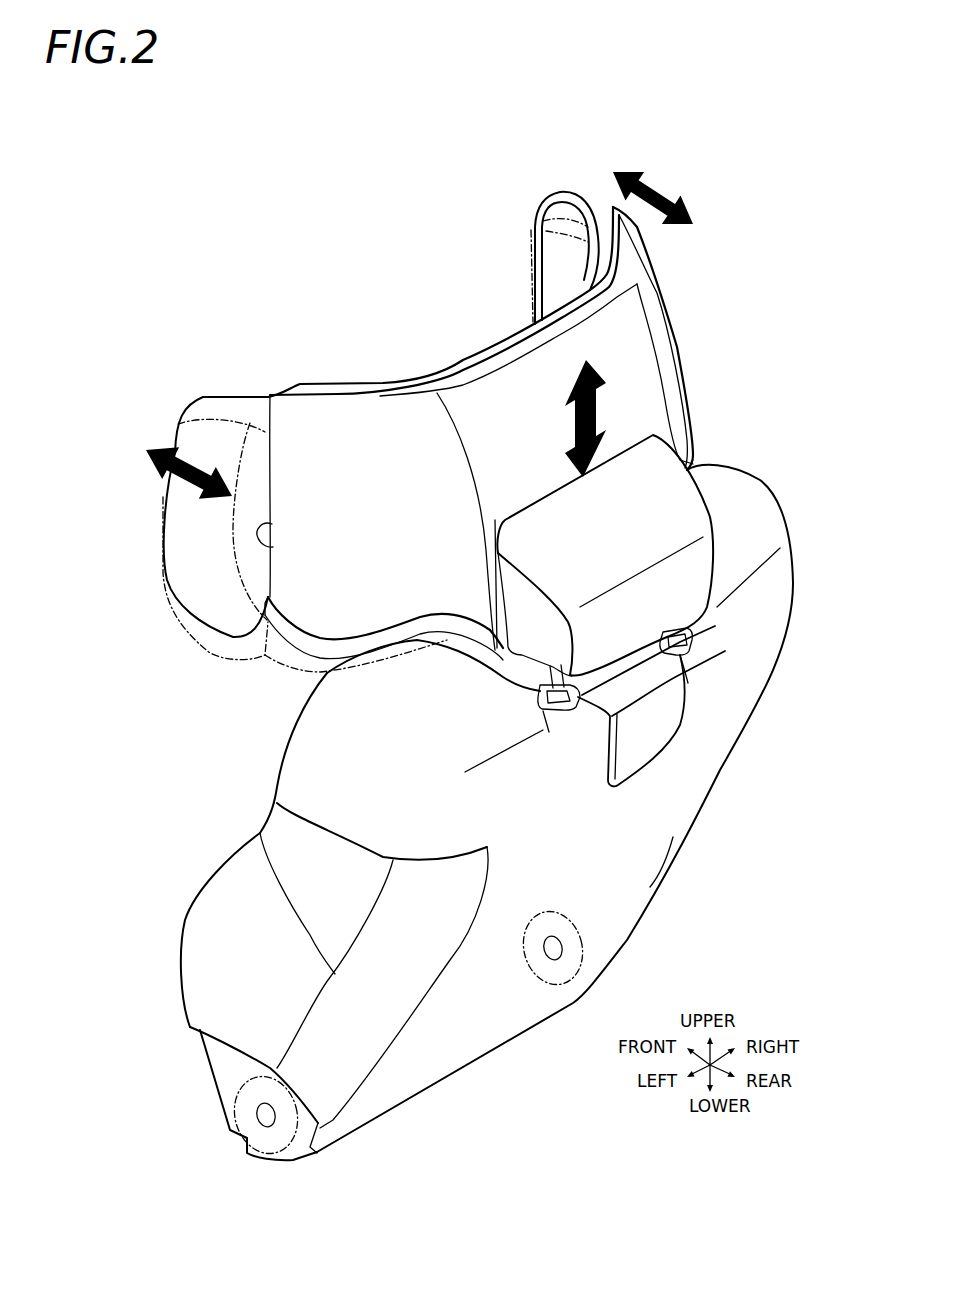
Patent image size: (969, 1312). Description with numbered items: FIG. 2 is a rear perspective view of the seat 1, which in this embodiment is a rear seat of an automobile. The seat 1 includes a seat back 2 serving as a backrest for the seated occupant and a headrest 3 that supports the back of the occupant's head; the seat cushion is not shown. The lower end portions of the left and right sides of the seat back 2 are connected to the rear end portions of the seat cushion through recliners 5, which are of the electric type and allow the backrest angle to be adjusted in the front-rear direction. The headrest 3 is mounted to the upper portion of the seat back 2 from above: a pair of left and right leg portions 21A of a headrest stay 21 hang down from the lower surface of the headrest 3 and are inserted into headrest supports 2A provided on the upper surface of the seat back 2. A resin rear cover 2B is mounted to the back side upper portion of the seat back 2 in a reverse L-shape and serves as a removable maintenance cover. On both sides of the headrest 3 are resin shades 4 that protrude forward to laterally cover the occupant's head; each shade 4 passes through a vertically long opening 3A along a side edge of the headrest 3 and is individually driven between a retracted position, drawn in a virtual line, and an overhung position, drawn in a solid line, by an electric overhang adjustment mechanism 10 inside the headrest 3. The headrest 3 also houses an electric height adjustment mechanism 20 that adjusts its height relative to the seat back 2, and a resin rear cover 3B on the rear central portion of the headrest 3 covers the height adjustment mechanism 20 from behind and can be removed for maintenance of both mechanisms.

The seat 1 is at (286, 240).
The seat back 2 is at (236, 884).
The headrest supports 2A is at (565, 712).
The rear cover 2B is at (648, 745).
The headrest 3 is at (448, 433).
The openings 3A is at (275, 547).
The rear cover 3B is at (560, 517).
The shade 4 is at (200, 413).
The recliner 5 is at (245, 1112).
The overhang adjustment mechanism 10 is at (448, 433).
The height adjustment mechanism 20 is at (377, 405).
The headrest stay 21 is at (543, 681).
The leg portions 21A is at (614, 672).